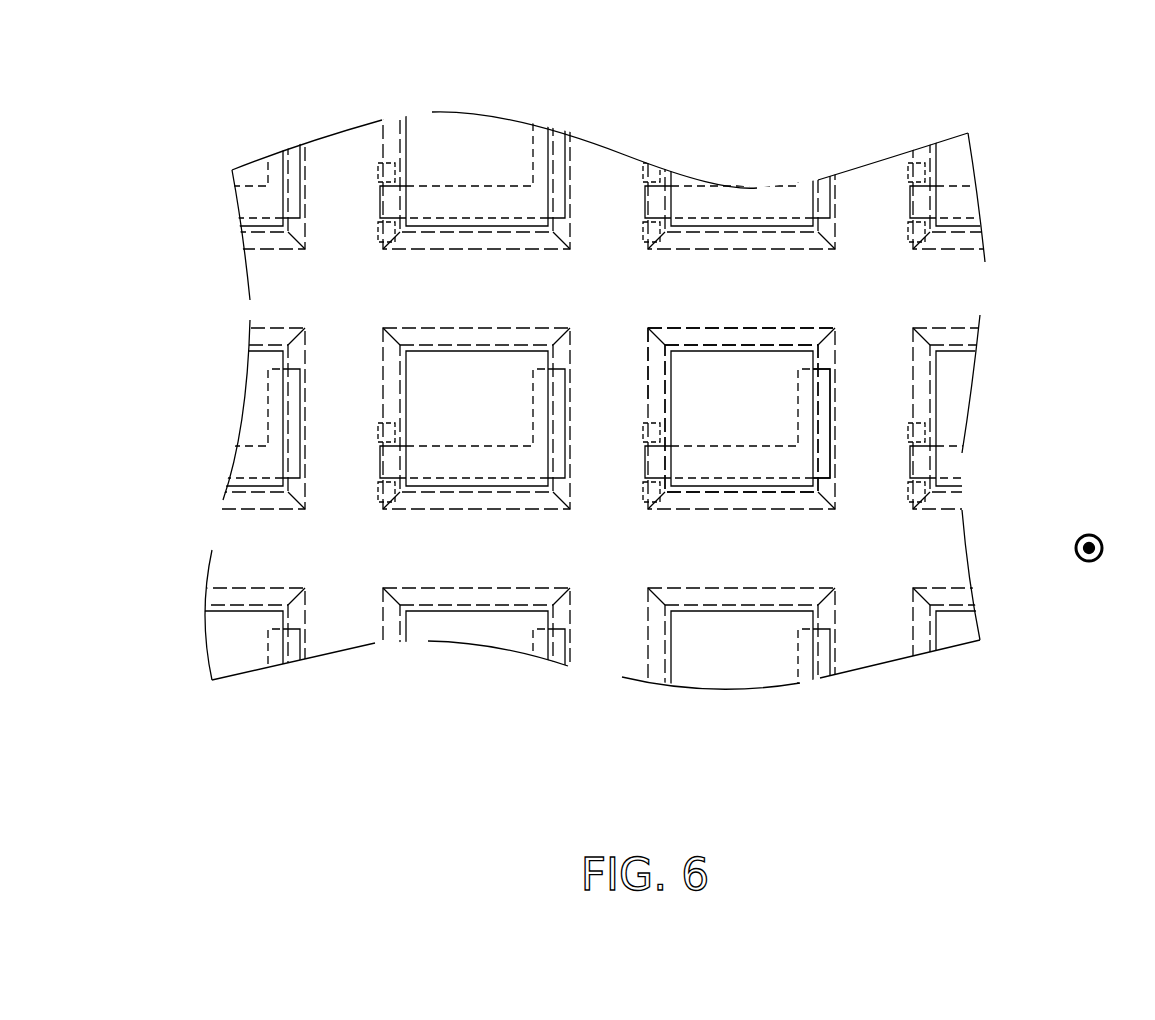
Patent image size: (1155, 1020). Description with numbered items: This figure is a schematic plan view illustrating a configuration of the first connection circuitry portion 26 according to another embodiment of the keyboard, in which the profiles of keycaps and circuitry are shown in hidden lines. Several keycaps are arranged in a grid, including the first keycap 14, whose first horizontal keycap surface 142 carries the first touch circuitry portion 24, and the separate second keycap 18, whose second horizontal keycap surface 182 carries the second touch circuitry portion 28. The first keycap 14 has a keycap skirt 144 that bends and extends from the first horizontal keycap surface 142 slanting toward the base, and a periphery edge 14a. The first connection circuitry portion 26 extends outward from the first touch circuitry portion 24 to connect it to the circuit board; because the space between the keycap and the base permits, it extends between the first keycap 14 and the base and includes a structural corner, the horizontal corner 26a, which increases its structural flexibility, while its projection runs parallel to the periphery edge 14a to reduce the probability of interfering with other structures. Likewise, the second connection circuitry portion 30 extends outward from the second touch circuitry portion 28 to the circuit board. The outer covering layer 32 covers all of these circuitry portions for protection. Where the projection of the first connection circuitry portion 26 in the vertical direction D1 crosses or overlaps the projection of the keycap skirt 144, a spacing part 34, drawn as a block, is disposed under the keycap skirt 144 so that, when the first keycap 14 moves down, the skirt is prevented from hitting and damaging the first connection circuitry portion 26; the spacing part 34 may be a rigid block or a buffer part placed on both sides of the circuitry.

The first keycap 14 is at (757, 508).
The periphery edge 14a is at (633, 345).
The first horizontal keycap surface 142 is at (787, 347).
The keycap skirt 144 is at (715, 327).
The second keycap 18 is at (468, 509).
The second horizontal keycap surface 182 is at (460, 349).
The first touch circuitry portion 24 is at (692, 483).
The first connection circuitry portion 26 is at (735, 447).
The horizontal corner 26a is at (829, 475).
The second touch circuitry portion 28 is at (433, 478).
The second connection circuitry portion 30 is at (470, 446).
The outer covering layer 32 is at (958, 292).
The spacing part 34 is at (645, 495).
The vertical direction D1 is at (1114, 548).